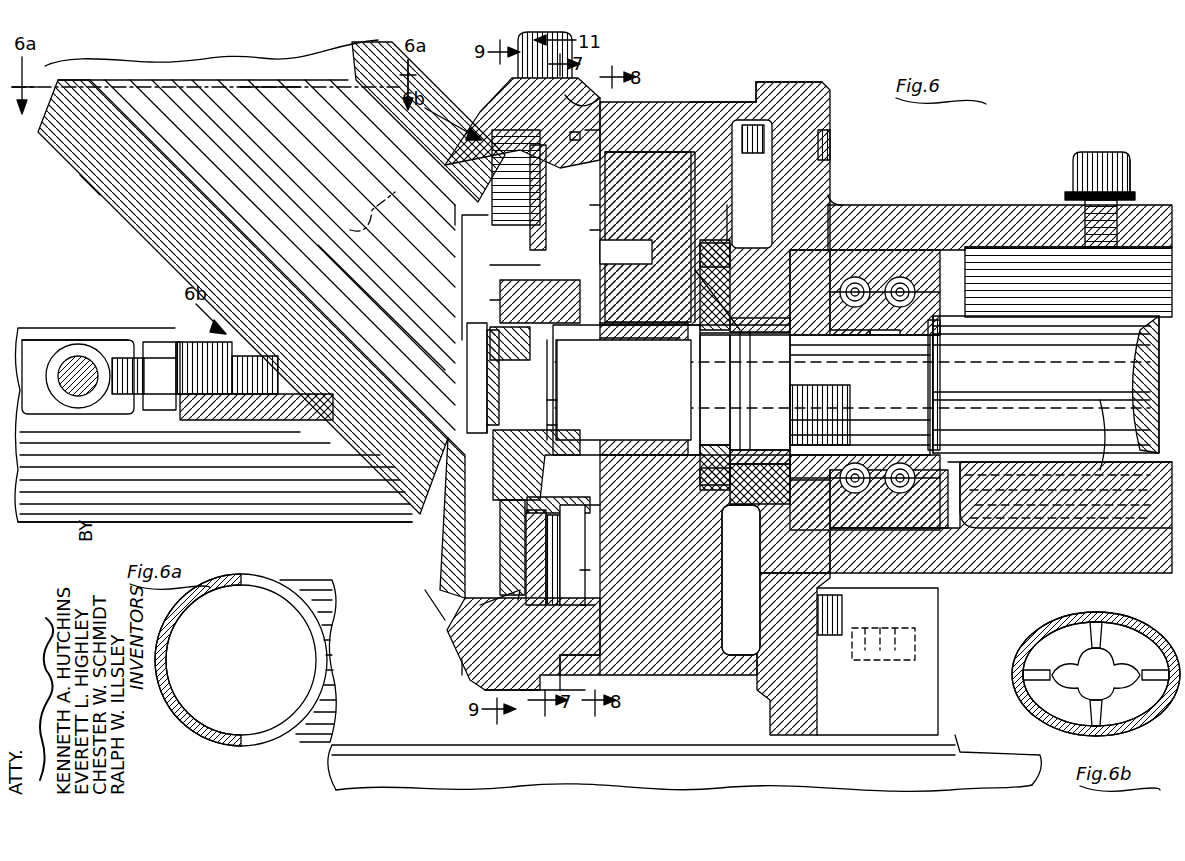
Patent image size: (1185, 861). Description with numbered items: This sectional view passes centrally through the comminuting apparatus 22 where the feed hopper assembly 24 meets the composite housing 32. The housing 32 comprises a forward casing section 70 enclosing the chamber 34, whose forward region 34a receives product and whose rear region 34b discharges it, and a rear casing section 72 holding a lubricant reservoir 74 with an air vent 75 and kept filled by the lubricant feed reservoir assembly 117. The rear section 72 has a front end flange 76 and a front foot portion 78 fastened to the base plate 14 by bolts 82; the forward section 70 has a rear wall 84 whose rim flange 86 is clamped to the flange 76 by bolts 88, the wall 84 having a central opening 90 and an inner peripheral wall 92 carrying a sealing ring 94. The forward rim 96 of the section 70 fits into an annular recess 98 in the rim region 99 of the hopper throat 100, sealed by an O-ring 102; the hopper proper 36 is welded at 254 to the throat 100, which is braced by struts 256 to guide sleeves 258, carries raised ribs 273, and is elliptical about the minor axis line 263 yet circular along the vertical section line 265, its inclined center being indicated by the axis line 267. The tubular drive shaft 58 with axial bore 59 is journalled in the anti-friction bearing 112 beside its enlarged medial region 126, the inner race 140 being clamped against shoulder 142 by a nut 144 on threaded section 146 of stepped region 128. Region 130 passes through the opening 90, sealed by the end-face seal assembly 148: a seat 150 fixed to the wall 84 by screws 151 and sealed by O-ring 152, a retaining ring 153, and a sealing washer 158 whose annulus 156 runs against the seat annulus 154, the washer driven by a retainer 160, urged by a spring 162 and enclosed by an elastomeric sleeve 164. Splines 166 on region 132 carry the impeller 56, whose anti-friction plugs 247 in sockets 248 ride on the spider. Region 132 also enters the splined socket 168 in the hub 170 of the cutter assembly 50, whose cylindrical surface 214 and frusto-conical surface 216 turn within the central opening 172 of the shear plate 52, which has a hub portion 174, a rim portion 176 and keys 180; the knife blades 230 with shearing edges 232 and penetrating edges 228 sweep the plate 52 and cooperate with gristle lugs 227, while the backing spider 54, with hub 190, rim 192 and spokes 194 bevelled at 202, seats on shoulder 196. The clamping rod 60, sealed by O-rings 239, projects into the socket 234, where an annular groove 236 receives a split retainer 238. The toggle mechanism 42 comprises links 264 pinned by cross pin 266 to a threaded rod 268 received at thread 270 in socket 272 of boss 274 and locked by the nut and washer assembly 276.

In FIG. 6, the base plate 14 is at (394, 745).
In FIG. 6, the comminuting and emulsifying apparatus proper 22 is at (650, 556).
In FIG. 6, the feed hopper assembly 24 is at (254, 146).
In FIG. 6A, the feed hopper assembly 24 is at (238, 740).
In FIG. 6, the composite housing 32 is at (790, 86).
In FIG. 6, the chamber 34 is at (470, 645).
In FIG. 6, the forward region of chamber 34a is at (468, 608).
In FIG. 6, the rear region of chamber 34b is at (688, 688).
In FIG. 6, the feed hopper proper 36 is at (350, 68).
In FIG. 6, the toggle joint mechanism 42 is at (100, 302).
In FIG. 6, the rotary cutter assembly 50 is at (460, 433).
In FIG. 6, the perforated shear plate 52 is at (498, 226).
In FIG. 6, the backing spider 54 is at (585, 582).
In FIG. 6, the impeller 56 is at (670, 150).
In FIG. 6, the tubular rotary drive shaft 58 is at (1070, 360).
In FIG. 6, the axial bore 59 is at (1115, 458).
In FIG. 6, the clamping rod 60 is at (545, 408).
In FIG. 6, the forward casing section 70 is at (648, 150).
In FIG. 6, the rear casing section 72 is at (932, 205).
In FIG. 6, the lubricant reservoir 74 is at (1002, 250).
In FIG. 6, the air vent 75 is at (1133, 168).
In FIG. 6, the front end flange 76 is at (798, 84).
In FIG. 6, the front foot portion 78 is at (925, 700).
In FIG. 6, the fastening bolts 82 is at (920, 632).
In FIG. 6, the rear wall 84 is at (728, 195).
In FIG. 6, the peripheral rim flange 86 is at (726, 102).
In FIG. 6, the clamping bolts 88 is at (836, 140).
In FIG. 6, the central opening 90 is at (745, 488).
In FIG. 6, the inner peripheral wall 92 is at (832, 312).
In FIG. 6, the sealing ring 94 is at (830, 200).
In FIG. 6, the forwardly projecting rim 96 is at (500, 100).
In FIG. 6, the annular recess 98 is at (488, 675).
In FIG. 6, the rim region 99 is at (575, 92).
In FIG. 6, the hopper throat 100 is at (90, 188).
In FIG. 6A, the hopper throat 100 is at (186, 728).
In FIG. 6B, the hopper throat 100 is at (1132, 620).
In FIG. 6, the O-ring seal 102 is at (528, 690).
In FIG. 6, the anti-friction bearing 112 is at (885, 540).
In FIG. 6, the lubricant feed reservoir assembly 117 is at (1114, 140).
In FIG. 6, the medial region 126 is at (1036, 448).
In FIG. 6, the stepped region 128 is at (536, 218).
In FIG. 6, the stepped region 130 is at (836, 470).
In FIG. 6, the stepped region 132 is at (640, 455).
In FIG. 6, the inner race 140 is at (900, 335).
In FIG. 6, the shoulder 142 is at (938, 362).
In FIG. 6, the nut 144 is at (828, 335).
In FIG. 6, the threaded section 146 is at (840, 383).
In FIG. 6, the end-face seal assembly 148 is at (722, 360).
In FIG. 6, the seat member 150 is at (742, 580).
In FIG. 6, the fastening screws 151 is at (727, 227).
In FIG. 6, the O-ring seal 152 is at (727, 211).
In FIG. 6, the retaining ring 153 is at (700, 300).
In FIG. 6, the flat sealing annulus 154 is at (750, 306).
In FIG. 6, the flat sealing annulus 156 is at (720, 430).
In FIG. 6, the sealing washer 158 is at (724, 352).
In FIG. 6, the retainer 160 is at (740, 470).
In FIG. 6, the spring 162 is at (745, 345).
In FIG. 6, the elastomeric sleeve 164 is at (750, 345).
In FIG. 6, the splines 166 is at (668, 455).
In FIG. 6, the splined socket 168 is at (530, 423).
In FIG. 6, the hub portion 170 is at (490, 302).
In FIG. 6, the central opening 172 is at (522, 508).
In FIG. 6, the inner peripheral hub portion 174 is at (538, 253).
In FIG. 6, the outer peripheral rim portion 176 is at (490, 112).
In FIG. 6, the keys 180 is at (575, 135).
In FIG. 6, the inner circular hub portion 190 is at (560, 520).
In FIG. 6, the outer peripheral rim portion 192 is at (600, 650).
In FIG. 6, the radial webs 194 is at (580, 520).
In FIG. 6, the shoulder 196 is at (596, 125).
In FIG. 6, the bevel 202 is at (582, 250).
In FIG. 6, the cylindrical surface 214 is at (500, 283).
In FIG. 6, the rear frusto-conical surface 216 is at (558, 475).
In FIG. 6, the gristle shearing lugs 227 is at (455, 212).
In FIG. 6, the product-penetrating edges 228 is at (425, 590).
In FIG. 6, the knife blade 230 is at (526, 540).
In FIG. 6, the shearing edge 232 is at (526, 560).
In FIG. 6, the socket 234 is at (525, 480).
In FIG. 6, the annular groove 236 is at (482, 395).
In FIG. 6, the split retainer 238 is at (466, 352).
In FIG. 6, the O-ring seals 239 is at (612, 350).
In FIG. 6, the anti-friction plugs 247 is at (648, 256).
In FIG. 6, the sockets 248 is at (576, 203).
In FIG. 6, the weld 254 is at (429, 84).
In FIG. 6, the supporting struts 256 is at (522, 60).
In FIG. 6, the guide sleeves 258 is at (304, 522).
In FIG. 6, the minor axis line 263 is at (365, 218).
In FIG. 6, the dual link assembly 264 is at (34, 338).
In FIG. 6, the vertical section line 265 is at (494, 328).
In FIG. 6, the cross pin 266 is at (80, 400).
In FIG. 6, the axis 267 is at (258, 92).
In FIG. 6, the threaded rod 268 is at (128, 356).
In FIG. 6, the threaded connection 270 is at (195, 342).
In FIG. 6, the socket 272 is at (240, 398).
In FIG. 6, the raised ribs 273 is at (402, 288).
In FIG. 6B, the raised ribs 273 is at (1096, 674).
In FIG. 6, the boss 274 is at (206, 420).
In FIG. 6, the nut and washer assembly 276 is at (156, 412).